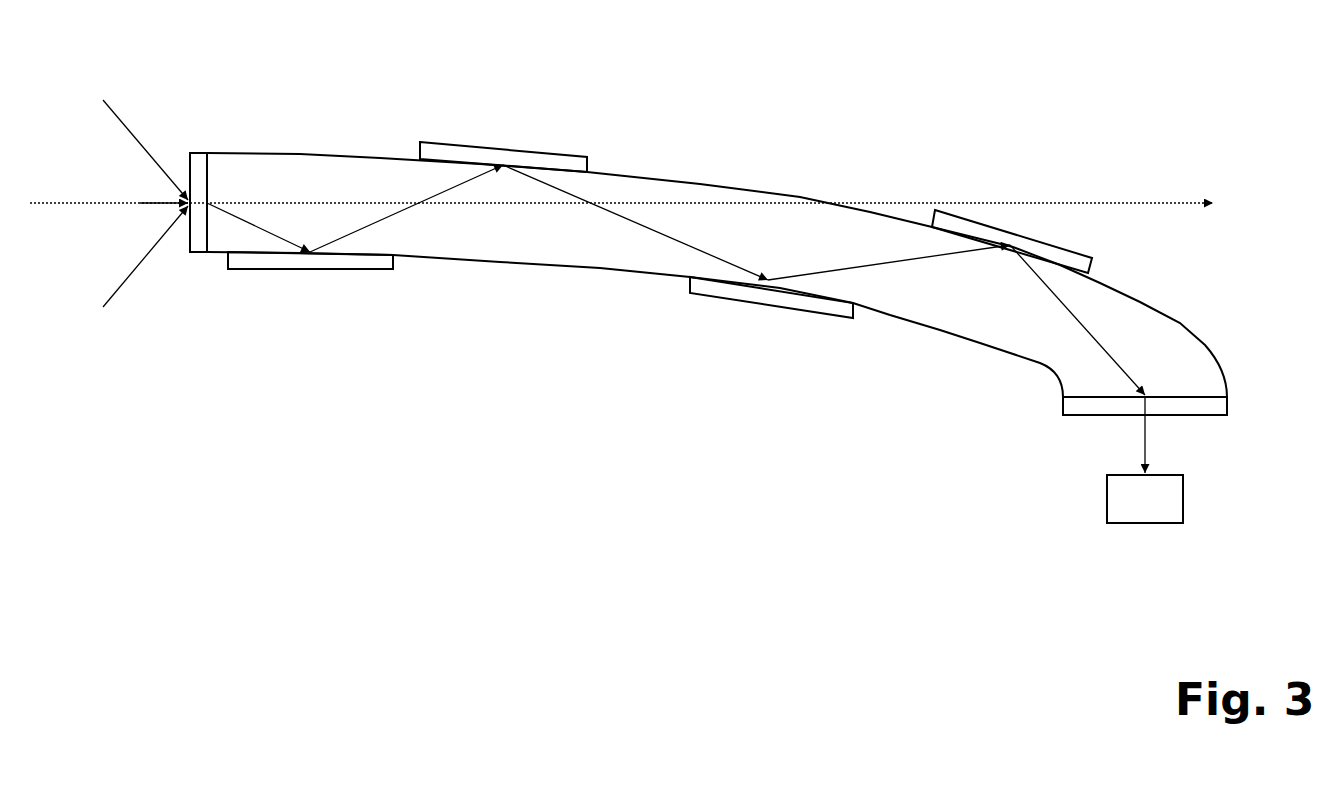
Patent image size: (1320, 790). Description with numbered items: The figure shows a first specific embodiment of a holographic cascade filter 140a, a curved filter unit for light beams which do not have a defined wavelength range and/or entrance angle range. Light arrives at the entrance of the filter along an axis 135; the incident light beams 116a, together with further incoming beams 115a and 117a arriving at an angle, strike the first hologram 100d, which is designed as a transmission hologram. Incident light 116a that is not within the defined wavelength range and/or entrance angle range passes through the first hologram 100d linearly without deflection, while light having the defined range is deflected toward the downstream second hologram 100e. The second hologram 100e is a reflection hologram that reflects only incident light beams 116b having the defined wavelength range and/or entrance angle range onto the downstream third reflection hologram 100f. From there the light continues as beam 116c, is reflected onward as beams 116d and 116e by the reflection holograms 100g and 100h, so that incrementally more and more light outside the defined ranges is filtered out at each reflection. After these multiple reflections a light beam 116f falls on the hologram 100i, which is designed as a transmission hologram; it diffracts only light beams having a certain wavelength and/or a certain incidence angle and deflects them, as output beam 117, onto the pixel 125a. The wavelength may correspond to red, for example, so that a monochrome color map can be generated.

The holographic cascade filter 140a is at (712, 100).
The first hologram 100d is at (200, 160).
The second hologram 100e is at (308, 262).
The third reflection hologram 100f is at (470, 152).
The reflection hologram 100g is at (757, 293).
The reflection hologram 100h is at (977, 230).
The transmission hologram 100i is at (1228, 400).
The optical axis 135 is at (1170, 202).
The incident light beams 116a is at (63, 200).
The incident light beam 115a is at (137, 95).
The incident light beam 117a is at (133, 268).
The incident light beams 116b is at (263, 230).
The light beam segment 116c is at (397, 213).
The light beam segment 116d is at (647, 232).
The light beam segment 116e is at (893, 268).
The light beam 116f is at (1083, 328).
The out-coupled light beam 117 is at (1145, 437).
The pixel 125a is at (1143, 523).